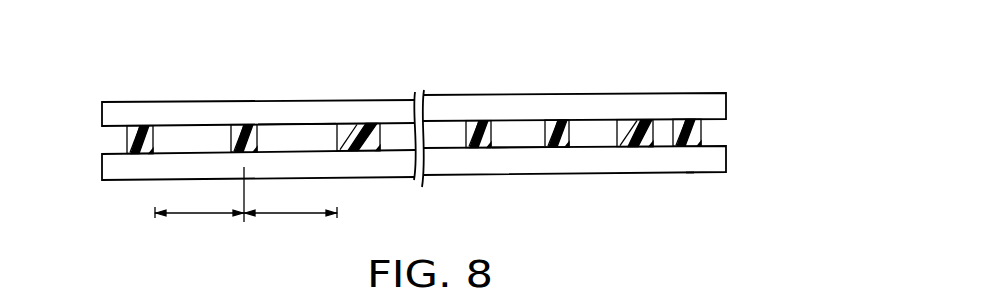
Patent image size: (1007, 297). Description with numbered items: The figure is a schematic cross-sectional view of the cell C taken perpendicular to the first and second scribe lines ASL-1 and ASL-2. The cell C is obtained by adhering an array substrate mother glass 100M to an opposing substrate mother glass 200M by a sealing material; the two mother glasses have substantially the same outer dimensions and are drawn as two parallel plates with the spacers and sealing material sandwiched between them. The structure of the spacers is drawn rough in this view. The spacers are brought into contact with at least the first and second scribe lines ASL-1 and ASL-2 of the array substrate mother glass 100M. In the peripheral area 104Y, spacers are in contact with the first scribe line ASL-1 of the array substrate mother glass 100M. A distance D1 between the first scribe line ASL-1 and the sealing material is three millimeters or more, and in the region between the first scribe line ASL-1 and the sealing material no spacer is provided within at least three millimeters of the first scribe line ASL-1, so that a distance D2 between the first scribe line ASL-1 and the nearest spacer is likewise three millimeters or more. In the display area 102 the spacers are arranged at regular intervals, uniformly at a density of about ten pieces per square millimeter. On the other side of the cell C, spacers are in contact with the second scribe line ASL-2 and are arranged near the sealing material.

The opposing substrate mother glass 200M is at (724, 106).
The array substrate mother glass 100M is at (724, 158).
The cell C is at (736, 130).
The peripheral area 104Y is at (298, 140).
The display area 102 is at (520, 134).
The first scribe line ASL-1 is at (243, 182).
The second scribe line ASL-2 is at (690, 173).
The distance between first scribe line and sealing material D1 is at (199, 226).
The distance between first scribe line and nearest spacer D2 is at (290, 226).